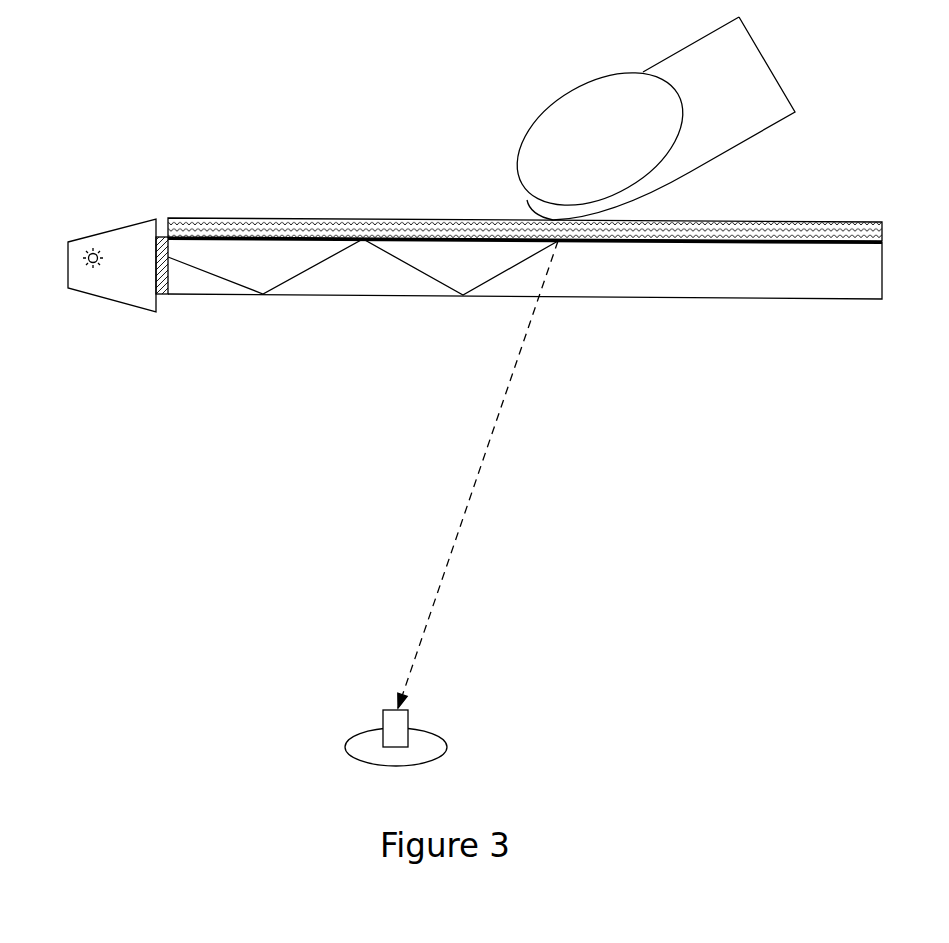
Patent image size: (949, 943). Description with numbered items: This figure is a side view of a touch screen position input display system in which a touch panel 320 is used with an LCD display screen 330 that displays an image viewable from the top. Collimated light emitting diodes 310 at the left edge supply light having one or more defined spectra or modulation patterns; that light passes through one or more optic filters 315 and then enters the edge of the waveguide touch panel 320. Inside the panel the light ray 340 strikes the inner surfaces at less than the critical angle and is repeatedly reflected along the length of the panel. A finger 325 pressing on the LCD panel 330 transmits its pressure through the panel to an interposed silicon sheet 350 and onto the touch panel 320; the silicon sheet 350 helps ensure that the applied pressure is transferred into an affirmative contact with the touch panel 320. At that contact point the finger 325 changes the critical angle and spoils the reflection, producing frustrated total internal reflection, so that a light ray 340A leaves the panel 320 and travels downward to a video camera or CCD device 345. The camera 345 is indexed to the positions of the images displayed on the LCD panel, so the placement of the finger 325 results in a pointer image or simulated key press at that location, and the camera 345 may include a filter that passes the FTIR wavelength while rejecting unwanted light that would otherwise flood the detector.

The collimated light emitting diodes 310 is at (107, 218).
The optic filters 315 is at (167, 216).
The touch panel 320 is at (215, 294).
The finger 325 is at (587, 100).
The LCD display screen 330 is at (253, 217).
The light ray 340 is at (300, 278).
The light ray 340A is at (397, 672).
The video camera or CCD device 345 is at (333, 727).
The silicon sheet 350 is at (883, 242).